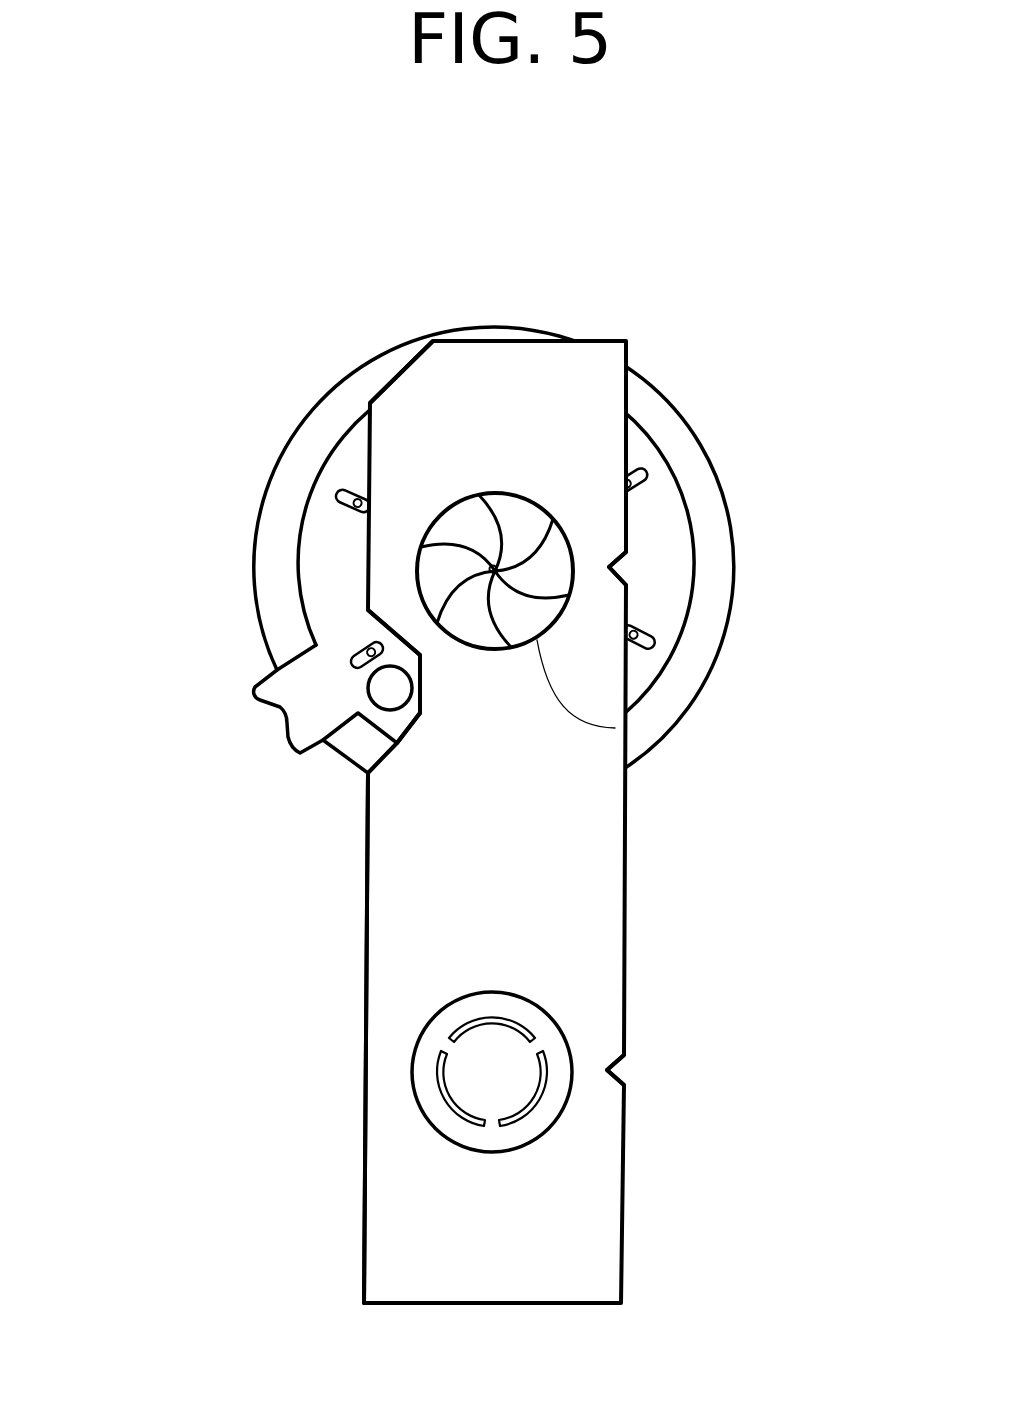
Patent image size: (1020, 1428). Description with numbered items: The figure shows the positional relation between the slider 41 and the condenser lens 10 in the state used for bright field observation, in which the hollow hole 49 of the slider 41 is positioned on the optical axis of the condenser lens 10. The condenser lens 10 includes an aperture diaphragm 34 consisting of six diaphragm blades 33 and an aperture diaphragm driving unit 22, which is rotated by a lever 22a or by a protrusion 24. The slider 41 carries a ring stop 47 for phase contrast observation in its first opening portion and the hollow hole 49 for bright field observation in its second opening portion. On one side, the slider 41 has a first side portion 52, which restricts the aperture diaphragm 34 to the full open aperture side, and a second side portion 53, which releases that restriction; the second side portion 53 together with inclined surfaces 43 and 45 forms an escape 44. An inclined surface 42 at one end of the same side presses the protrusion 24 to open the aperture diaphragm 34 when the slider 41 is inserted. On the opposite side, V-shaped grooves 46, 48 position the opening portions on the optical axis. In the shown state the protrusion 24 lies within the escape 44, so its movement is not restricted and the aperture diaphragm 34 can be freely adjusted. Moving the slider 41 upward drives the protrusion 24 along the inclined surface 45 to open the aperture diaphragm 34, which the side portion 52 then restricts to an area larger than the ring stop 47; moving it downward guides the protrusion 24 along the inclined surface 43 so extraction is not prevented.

The condenser lens 10 is at (737, 548).
The aperture diaphragm driving unit 22 is at (468, 539).
The lever 22a is at (255, 687).
The protrusion 24 is at (388, 695).
The diaphragm blades 33 is at (569, 438).
The aperture diaphragm 34 is at (490, 562).
The slider 41 is at (365, 1215).
The inclined surface 42 is at (388, 370).
The inclined surface 43 is at (388, 625).
The escape 44 is at (470, 715).
The inclined surface 45 is at (388, 758).
The V-shaped groove 46 is at (613, 1072).
The ring stop 47 is at (523, 1025).
The V-shaped groove 48 is at (627, 568).
The hollow hole 49 is at (615, 728).
The first side portion 52 is at (365, 1105).
The second side portion 53 is at (437, 723).